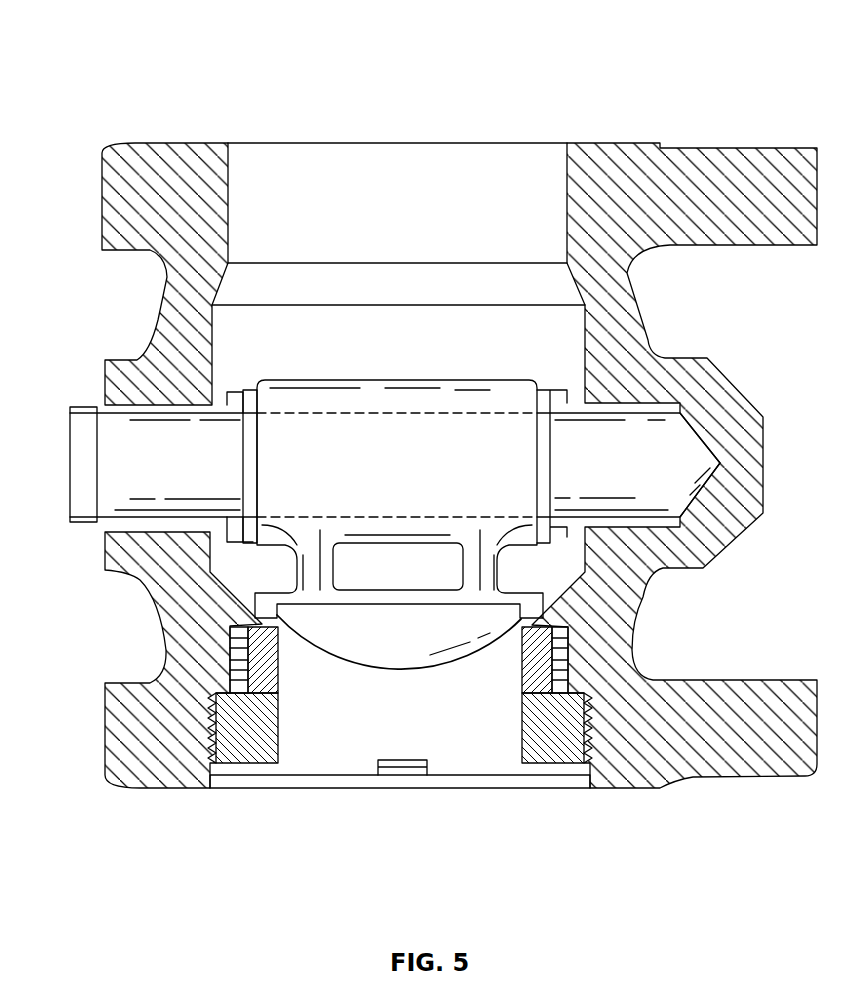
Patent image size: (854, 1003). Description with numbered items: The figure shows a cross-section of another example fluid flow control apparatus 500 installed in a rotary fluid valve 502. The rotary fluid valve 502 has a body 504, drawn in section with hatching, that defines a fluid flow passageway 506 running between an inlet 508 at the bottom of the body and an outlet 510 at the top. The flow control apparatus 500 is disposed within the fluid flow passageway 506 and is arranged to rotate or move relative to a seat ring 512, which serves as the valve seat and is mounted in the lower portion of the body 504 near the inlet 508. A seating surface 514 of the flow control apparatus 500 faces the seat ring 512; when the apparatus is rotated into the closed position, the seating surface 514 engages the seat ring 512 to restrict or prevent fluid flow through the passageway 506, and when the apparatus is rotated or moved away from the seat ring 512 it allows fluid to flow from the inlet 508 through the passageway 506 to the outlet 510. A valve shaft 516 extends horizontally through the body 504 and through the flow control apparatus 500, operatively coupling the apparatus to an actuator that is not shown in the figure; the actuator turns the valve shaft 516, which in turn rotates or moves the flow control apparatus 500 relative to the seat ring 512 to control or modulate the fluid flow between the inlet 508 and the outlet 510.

The fluid flow control apparatus 500 is at (440, 348).
The rotary fluid valve 502 is at (735, 46).
The body 504 is at (652, 590).
The fluid flow passageway 506 is at (407, 235).
The inlet 508 is at (410, 789).
The outlet 510 is at (395, 143).
The seat ring 512 is at (253, 665).
The seating surface 514 is at (365, 668).
The valve shaft 516 is at (92, 425).